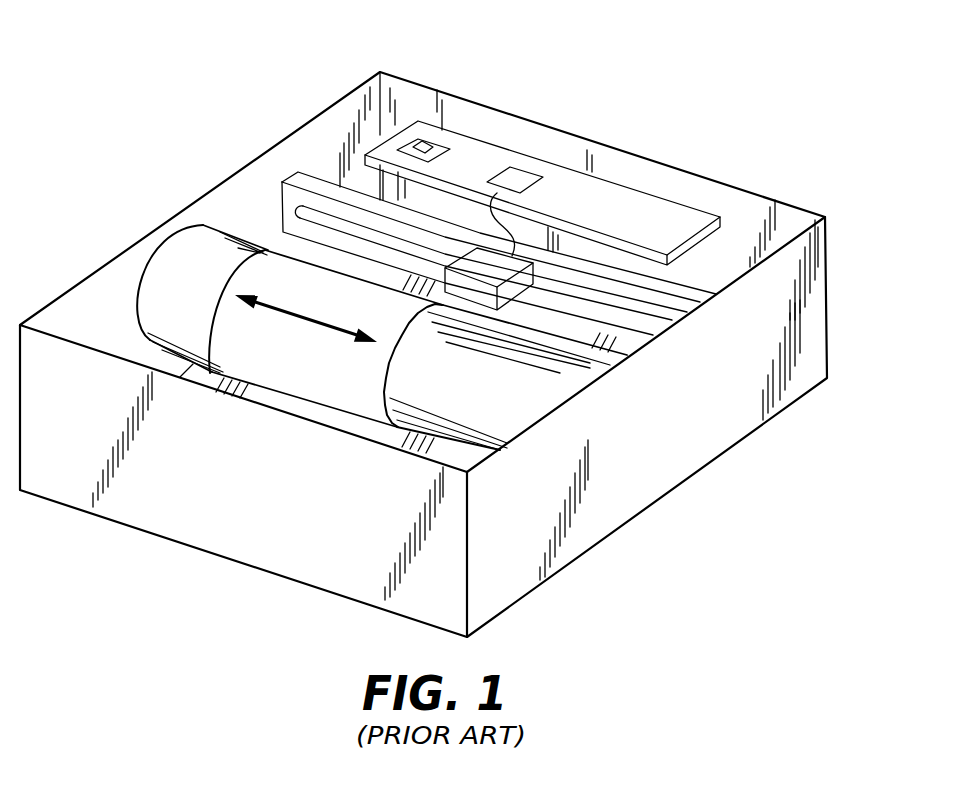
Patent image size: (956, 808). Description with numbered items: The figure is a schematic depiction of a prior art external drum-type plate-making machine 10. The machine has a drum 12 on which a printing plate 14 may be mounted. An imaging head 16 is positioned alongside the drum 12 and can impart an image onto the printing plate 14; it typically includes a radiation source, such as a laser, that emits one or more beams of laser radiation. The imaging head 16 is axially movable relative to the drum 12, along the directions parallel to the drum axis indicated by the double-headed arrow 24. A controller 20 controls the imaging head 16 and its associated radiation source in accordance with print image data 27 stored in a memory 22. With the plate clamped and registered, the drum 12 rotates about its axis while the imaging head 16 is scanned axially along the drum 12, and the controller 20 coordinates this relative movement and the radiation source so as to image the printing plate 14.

The plate-making machine 10 is at (810, 146).
The drum 12 is at (167, 275).
The printing plate 14 is at (263, 270).
The imaging head 16 is at (507, 267).
The controller 20 is at (513, 177).
The memory 22 is at (437, 147).
The double-headed arrow 24 is at (278, 300).
The print image data 27 is at (423, 143).